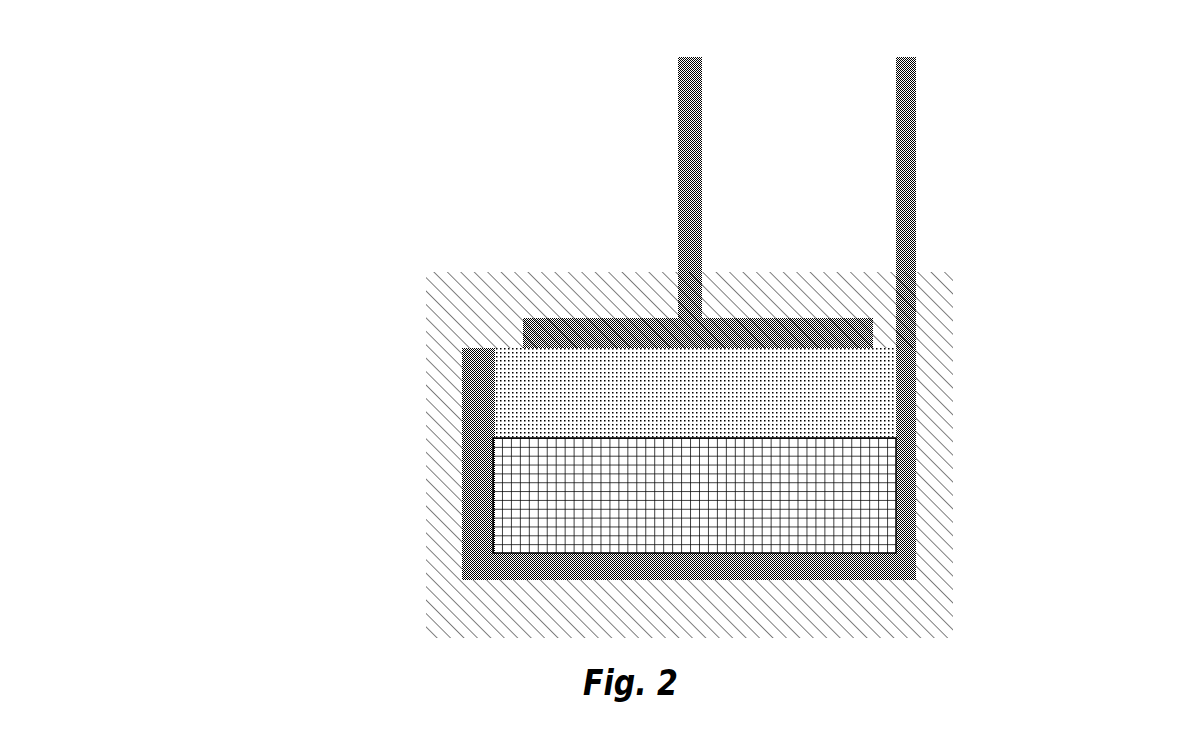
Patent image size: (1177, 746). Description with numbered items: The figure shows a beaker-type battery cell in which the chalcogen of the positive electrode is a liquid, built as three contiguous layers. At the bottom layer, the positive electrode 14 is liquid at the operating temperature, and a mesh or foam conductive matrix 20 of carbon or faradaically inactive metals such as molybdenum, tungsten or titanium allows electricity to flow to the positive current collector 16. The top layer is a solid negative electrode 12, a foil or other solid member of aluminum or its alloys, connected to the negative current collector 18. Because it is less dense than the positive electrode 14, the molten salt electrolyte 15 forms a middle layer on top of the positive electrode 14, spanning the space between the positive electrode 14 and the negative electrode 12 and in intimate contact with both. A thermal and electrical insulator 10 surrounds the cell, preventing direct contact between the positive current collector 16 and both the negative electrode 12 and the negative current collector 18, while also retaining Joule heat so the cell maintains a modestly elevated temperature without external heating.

The thermal and electrical insulator 10 is at (928, 391).
The negative electrode 12 is at (843, 263).
The positive electrode 14 is at (508, 485).
The molten salt electrolyte 15 is at (532, 418).
The positive current collector 16 is at (916, 125).
The negative current collector 18 is at (697, 66).
The mesh or foam conductive matrix 20 is at (650, 533).